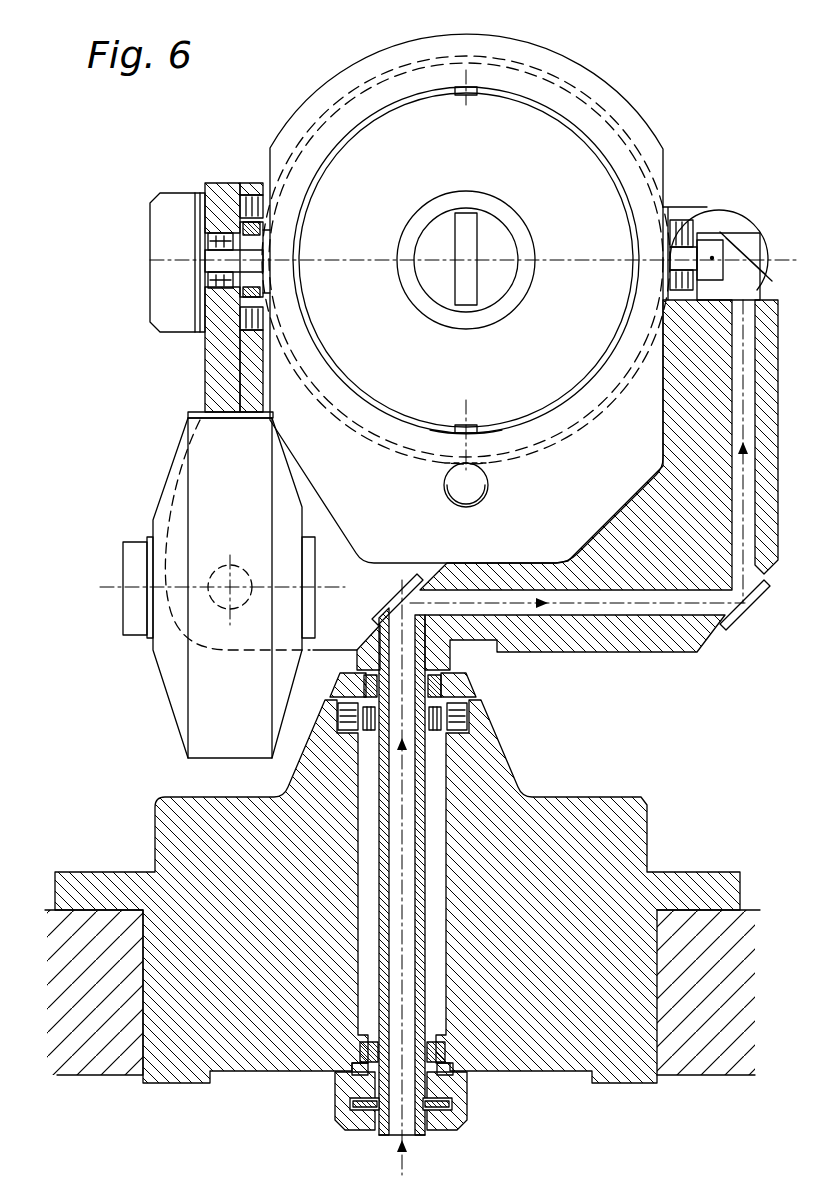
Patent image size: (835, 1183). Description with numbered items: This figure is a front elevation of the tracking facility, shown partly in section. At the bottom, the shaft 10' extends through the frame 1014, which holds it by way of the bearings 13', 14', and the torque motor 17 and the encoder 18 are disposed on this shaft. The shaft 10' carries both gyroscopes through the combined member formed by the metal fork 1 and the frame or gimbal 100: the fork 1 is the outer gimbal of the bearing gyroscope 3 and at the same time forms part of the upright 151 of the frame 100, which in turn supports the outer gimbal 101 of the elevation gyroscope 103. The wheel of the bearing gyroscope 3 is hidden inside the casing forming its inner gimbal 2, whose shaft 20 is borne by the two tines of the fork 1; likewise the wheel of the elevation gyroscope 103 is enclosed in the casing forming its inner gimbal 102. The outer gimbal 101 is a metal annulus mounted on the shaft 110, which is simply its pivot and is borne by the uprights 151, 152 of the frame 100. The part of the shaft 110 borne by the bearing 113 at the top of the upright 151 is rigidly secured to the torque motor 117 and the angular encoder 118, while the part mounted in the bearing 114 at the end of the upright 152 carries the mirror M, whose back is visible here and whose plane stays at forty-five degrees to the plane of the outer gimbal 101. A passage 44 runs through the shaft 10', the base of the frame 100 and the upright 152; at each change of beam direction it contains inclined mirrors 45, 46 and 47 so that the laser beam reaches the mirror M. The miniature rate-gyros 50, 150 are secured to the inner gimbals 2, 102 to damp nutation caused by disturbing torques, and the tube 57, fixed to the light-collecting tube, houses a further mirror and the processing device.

The gimbal 100 is at (562, 565).
The outer gimbal 101 is at (628, 110).
The inner gimbal 102 is at (552, 466).
The elevation gyroscope 103 is at (516, 376).
The miniature rate-gyro 150 is at (468, 256).
The tube 57 is at (470, 506).
The upright 151 is at (218, 358).
The torque motor 117 is at (250, 195).
The angular encoder 118 is at (160, 226).
The shaft 110 is at (210, 258).
The bearing 113 is at (210, 280).
The bearing gyroscope 3 is at (230, 706).
The inner gimbal 2 is at (172, 690).
The metal fork 1 is at (338, 546).
The miniature rate-gyro 50 is at (133, 545).
The shaft 20 is at (233, 570).
The mirror 47 is at (757, 245).
The bearing 114 is at (700, 206).
The upright 152 is at (668, 424).
The passage 44 is at (592, 606).
The mirror 46 is at (752, 618).
The mirror 45 is at (398, 600).
The horizontal shaft 10' is at (430, 871).
The bearing 14' is at (415, 675).
The torque motor 17 is at (468, 718).
The frame 1014 is at (636, 800).
The bearing 13' is at (416, 1048).
The encoder 18 is at (462, 1108).